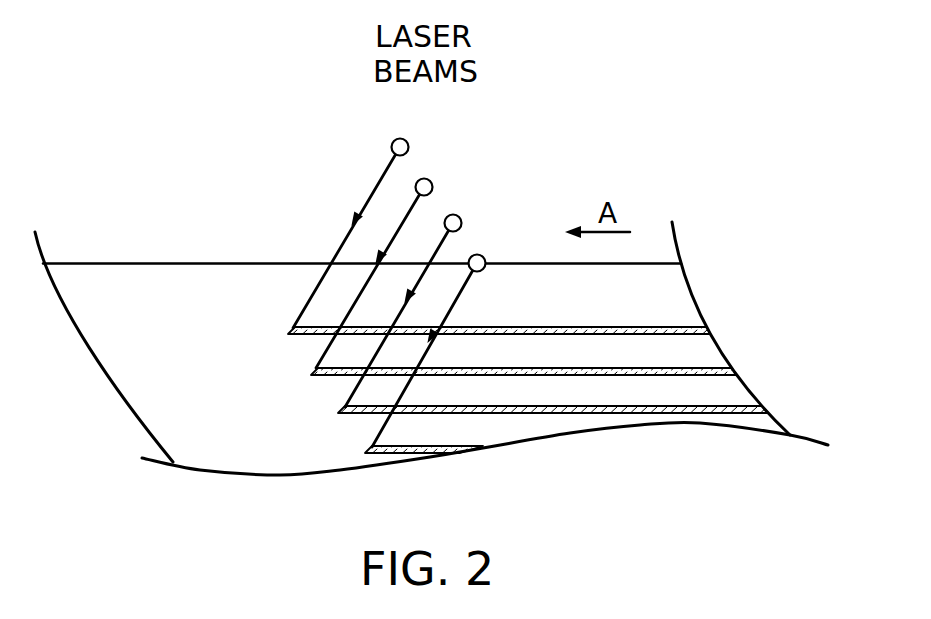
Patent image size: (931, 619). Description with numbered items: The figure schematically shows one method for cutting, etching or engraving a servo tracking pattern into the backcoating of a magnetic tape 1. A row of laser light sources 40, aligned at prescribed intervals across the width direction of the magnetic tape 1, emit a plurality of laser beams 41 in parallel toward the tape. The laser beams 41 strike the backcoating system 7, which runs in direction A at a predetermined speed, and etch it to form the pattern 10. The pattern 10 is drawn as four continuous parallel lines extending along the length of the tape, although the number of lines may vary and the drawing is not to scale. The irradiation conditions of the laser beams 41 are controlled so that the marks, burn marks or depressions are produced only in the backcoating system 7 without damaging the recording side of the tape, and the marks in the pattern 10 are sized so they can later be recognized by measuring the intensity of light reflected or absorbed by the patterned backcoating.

The magnetic tape 1 is at (185, 240).
The backcoating system 7 is at (162, 434).
The pattern 10 is at (688, 326).
The laser light sources 40 is at (409, 137).
The laser beams 41 is at (373, 190).